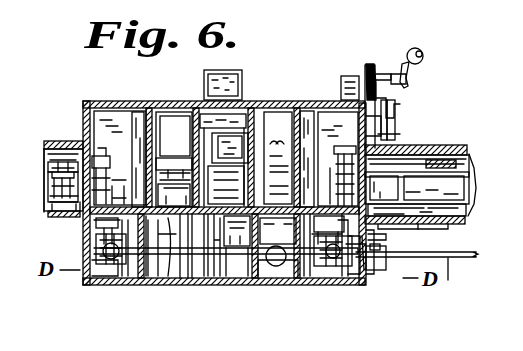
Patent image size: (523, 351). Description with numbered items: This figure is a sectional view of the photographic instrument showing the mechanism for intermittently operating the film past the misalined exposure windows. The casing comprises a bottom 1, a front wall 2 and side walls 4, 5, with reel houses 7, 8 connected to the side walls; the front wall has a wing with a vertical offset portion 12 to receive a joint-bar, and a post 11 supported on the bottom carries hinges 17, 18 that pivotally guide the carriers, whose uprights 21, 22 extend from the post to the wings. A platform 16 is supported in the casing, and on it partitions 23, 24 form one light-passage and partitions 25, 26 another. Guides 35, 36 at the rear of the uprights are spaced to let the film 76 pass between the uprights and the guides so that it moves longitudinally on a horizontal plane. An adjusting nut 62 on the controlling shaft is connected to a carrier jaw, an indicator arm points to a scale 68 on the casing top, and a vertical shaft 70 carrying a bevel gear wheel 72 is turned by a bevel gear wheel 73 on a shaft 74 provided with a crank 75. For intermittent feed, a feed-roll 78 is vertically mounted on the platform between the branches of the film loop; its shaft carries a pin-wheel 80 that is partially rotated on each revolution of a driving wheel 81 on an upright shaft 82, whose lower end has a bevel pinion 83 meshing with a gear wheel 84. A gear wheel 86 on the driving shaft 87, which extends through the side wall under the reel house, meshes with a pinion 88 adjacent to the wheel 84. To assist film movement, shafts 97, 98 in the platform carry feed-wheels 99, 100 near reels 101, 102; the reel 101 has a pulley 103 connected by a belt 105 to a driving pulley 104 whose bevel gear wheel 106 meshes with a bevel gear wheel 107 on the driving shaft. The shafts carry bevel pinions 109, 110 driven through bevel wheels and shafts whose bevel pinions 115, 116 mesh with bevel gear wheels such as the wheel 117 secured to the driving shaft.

The bottom 1 is at (165, 262).
The front wall 2 is at (106, 108).
The side wall 4 is at (370, 118).
The side wall 5 is at (78, 112).
The reel house 7 is at (460, 166).
The reel house 8 is at (42, 150).
The post 11 is at (248, 272).
The vertical offset portion 12 is at (160, 272).
The platform 16 is at (196, 272).
The hinge 17 is at (284, 272).
The hinge 18 is at (206, 272).
The upright 21 is at (300, 272).
The upright 22 is at (142, 272).
The partition 23 is at (298, 150).
The partition 24 is at (256, 112).
The partition 25 is at (176, 106).
The partition 26 is at (142, 104).
The guide 35 is at (312, 124).
The guide 36 is at (124, 272).
The adjusting nut 62 is at (140, 104).
The scale 68 is at (200, 80).
The shaft 70 is at (380, 112).
The bevel gear wheel 72 is at (392, 94).
The bevel gear wheel 73 is at (360, 56).
The shaft 74 is at (372, 66).
The crank 75 is at (408, 56).
The film 76 is at (420, 184).
The feed-roll 78 is at (182, 150).
The pin-wheel 80 is at (278, 158).
The driving wheel 81 is at (238, 118).
The upright shaft 82 is at (184, 112).
The bevel pinion 83 is at (274, 246).
The gear wheel 84 is at (262, 272).
The gear wheel 86 is at (186, 262).
The driving shaft 87 is at (440, 254).
The pinion 88 is at (322, 274).
The shaft 97 is at (328, 230).
The shaft 98 is at (86, 218).
The feed-wheel 99 is at (378, 152).
The feed-wheel 100 is at (46, 210).
The reel 101 is at (434, 150).
The reel 102 is at (36, 134).
The pulley 103 is at (464, 214).
The driving pulley 104 is at (430, 140).
The belt 105 is at (464, 172).
The bevel gear wheel 106 is at (400, 228).
The bevel gear wheel 107 is at (408, 266).
The bevel pinion 109 is at (333, 251).
The bevel pinion 110 is at (88, 240).
The bevel pinion 115 is at (342, 272).
The bevel pinion 116 is at (96, 270).
The bevel gear wheel 117 is at (360, 272).